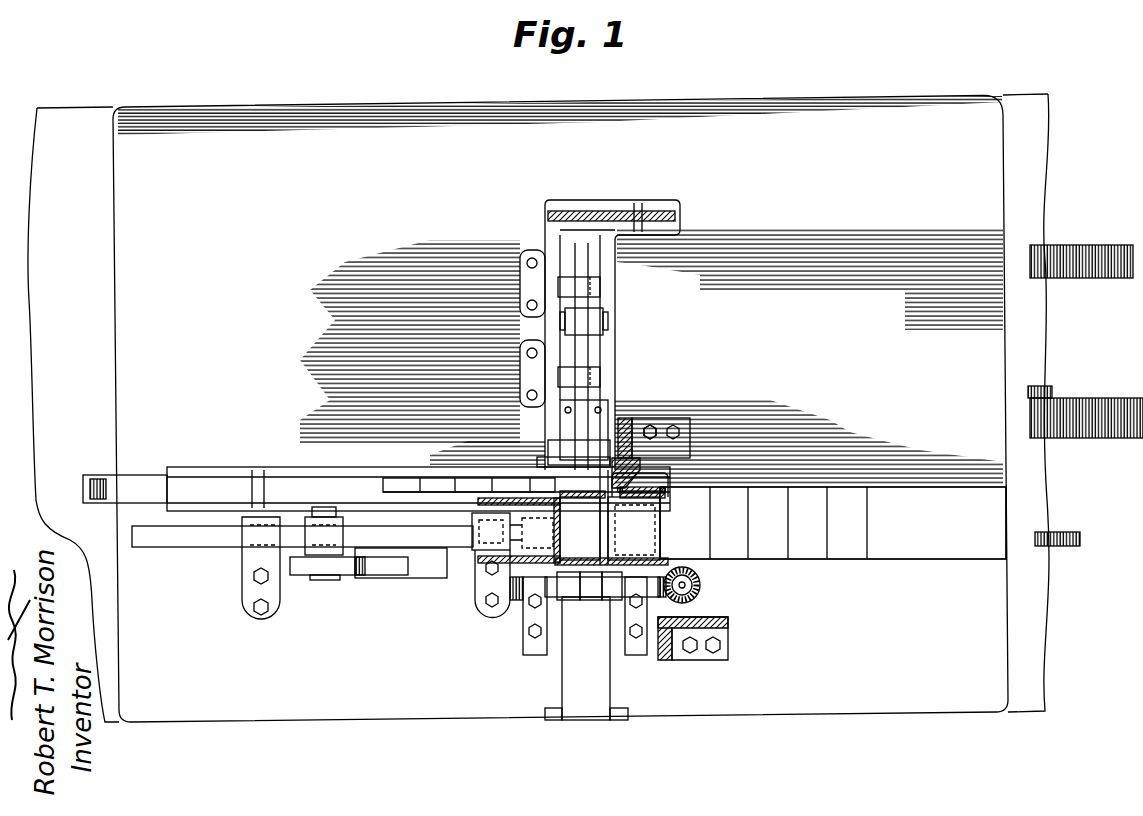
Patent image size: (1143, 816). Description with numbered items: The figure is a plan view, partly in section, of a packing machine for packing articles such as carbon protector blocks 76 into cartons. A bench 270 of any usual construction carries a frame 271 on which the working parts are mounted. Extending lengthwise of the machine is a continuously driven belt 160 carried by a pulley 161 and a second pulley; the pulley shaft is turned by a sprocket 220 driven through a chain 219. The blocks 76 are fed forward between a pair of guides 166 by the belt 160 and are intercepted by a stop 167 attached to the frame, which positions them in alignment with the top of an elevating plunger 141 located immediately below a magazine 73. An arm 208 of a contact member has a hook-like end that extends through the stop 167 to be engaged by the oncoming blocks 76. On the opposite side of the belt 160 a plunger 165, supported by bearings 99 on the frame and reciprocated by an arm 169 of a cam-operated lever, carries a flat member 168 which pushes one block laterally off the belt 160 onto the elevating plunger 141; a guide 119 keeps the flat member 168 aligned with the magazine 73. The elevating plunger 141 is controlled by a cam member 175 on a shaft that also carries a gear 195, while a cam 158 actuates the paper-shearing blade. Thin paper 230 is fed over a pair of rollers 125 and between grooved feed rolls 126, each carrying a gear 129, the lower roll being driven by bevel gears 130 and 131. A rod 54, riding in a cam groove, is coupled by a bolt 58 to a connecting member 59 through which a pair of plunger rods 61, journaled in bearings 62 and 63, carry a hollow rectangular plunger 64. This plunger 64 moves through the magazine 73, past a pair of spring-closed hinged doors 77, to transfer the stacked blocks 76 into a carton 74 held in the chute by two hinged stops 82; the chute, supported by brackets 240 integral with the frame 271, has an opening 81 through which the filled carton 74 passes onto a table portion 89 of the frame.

The bench 270 is at (68, 130).
The frame 271 is at (172, 122).
The chain 219 is at (575, 212).
The sprocket 220 is at (665, 212).
The bearings 99 is at (600, 288).
The arm 169 is at (607, 316).
The plunger 165 is at (607, 330).
The flat member 168 is at (607, 406).
The magazine 73 is at (574, 505).
The guide 119 is at (548, 472).
The arm 208 is at (612, 475).
The brackets 240 is at (688, 432).
The stop 167 is at (652, 437).
The pulley 161 is at (146, 480).
The belt 160 is at (326, 487).
The guides 166 is at (264, 470).
The blocks 76 is at (478, 487).
The hinged stops 82 is at (666, 496).
The carton 74 is at (658, 524).
The table portion 89 is at (942, 543).
The opening 81 is at (666, 542).
The hinged doors 77 is at (612, 546).
The elevating plunger 141 is at (602, 535).
The bearing 63 is at (522, 543).
The plunger 64 is at (533, 556).
The plunger rods 61 is at (160, 543).
The bearing 62 is at (250, 540).
The rod 54 is at (309, 565).
The connecting member 59 is at (335, 545).
The bolt 58 is at (322, 576).
The grooved feed rolls 126 is at (595, 598).
The gear 129 is at (517, 600).
The bevel gear 131 is at (702, 585).
The bevel gear 130 is at (692, 604).
The paper 230 is at (600, 670).
The rollers 125 is at (560, 710).
The gear 195 is at (1113, 250).
The cam member 175 is at (1110, 400).
The cam 158 is at (1080, 540).